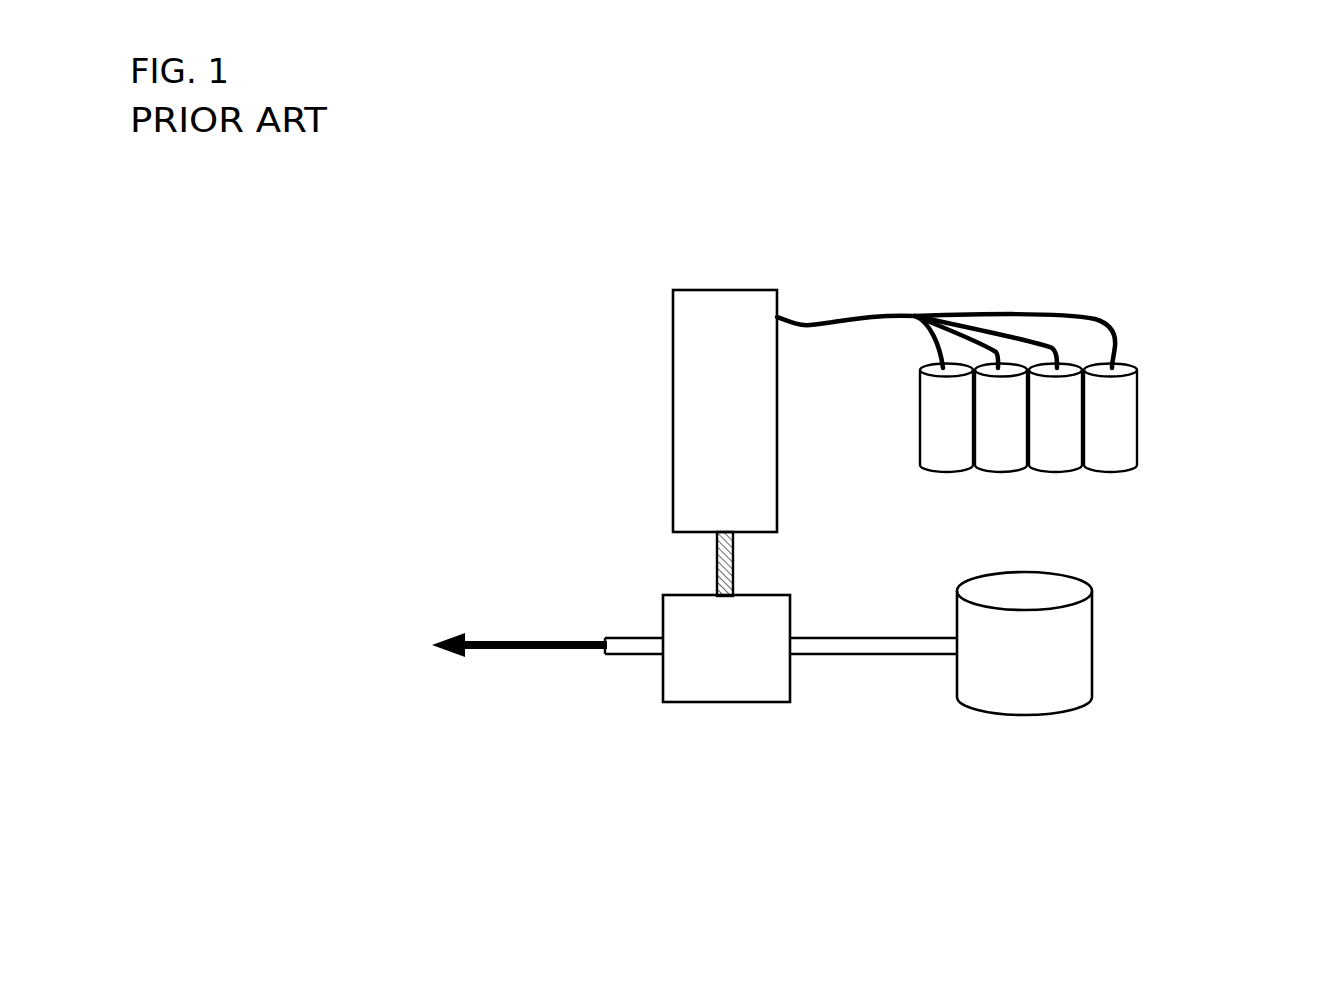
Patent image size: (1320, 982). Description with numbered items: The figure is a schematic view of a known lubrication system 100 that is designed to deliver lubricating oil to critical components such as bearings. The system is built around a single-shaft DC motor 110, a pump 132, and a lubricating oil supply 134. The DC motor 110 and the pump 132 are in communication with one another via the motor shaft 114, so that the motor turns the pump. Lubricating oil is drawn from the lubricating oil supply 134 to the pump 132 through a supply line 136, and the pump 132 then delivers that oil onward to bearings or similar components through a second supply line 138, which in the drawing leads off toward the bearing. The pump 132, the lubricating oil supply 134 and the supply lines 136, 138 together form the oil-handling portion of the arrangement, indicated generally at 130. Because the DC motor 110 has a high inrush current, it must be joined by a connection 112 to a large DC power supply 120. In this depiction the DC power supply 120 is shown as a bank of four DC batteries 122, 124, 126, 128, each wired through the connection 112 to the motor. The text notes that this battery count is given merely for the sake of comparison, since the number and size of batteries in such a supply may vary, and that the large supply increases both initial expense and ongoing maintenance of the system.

The lubrication system 100 is at (916, 241).
The single-shaft DC motor 110 is at (704, 421).
The connection 112 is at (893, 316).
The motor shaft 114 is at (717, 568).
The DC power supply 120 is at (1166, 382).
The DC battery 122 is at (927, 433).
The DC battery 124 is at (982, 433).
The DC battery 126 is at (1036, 433).
The DC battery 128 is at (1091, 433).
The lubricant supply assembly 130 is at (875, 740).
The pump 132 is at (705, 658).
The lubricating oil supply 134 is at (1004, 670).
The supply line 136 is at (883, 640).
The supply line 138 is at (643, 652).